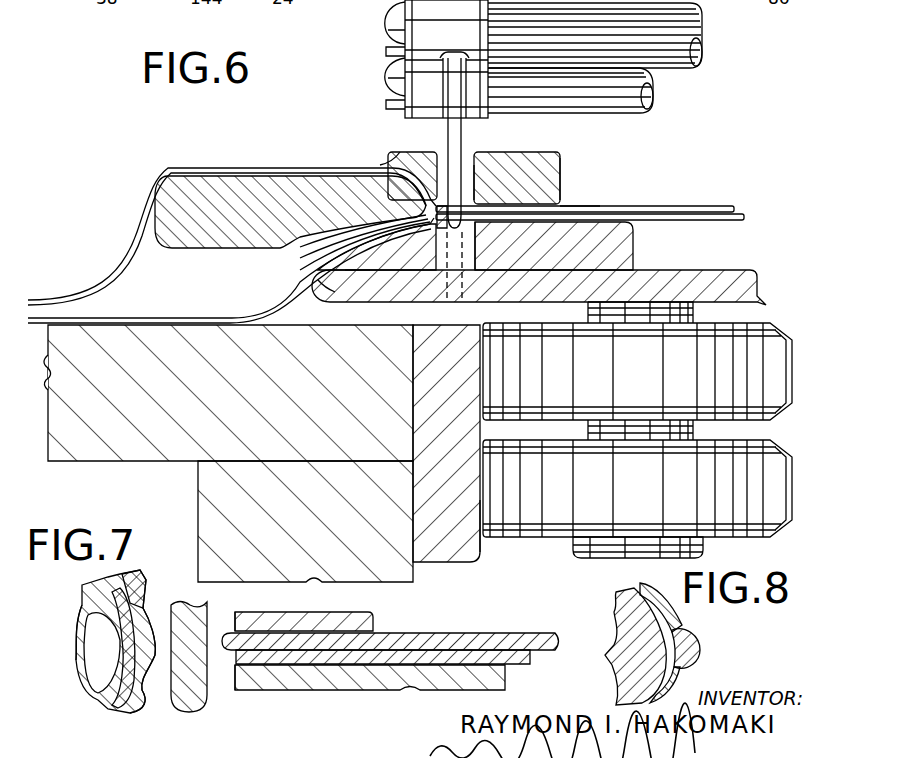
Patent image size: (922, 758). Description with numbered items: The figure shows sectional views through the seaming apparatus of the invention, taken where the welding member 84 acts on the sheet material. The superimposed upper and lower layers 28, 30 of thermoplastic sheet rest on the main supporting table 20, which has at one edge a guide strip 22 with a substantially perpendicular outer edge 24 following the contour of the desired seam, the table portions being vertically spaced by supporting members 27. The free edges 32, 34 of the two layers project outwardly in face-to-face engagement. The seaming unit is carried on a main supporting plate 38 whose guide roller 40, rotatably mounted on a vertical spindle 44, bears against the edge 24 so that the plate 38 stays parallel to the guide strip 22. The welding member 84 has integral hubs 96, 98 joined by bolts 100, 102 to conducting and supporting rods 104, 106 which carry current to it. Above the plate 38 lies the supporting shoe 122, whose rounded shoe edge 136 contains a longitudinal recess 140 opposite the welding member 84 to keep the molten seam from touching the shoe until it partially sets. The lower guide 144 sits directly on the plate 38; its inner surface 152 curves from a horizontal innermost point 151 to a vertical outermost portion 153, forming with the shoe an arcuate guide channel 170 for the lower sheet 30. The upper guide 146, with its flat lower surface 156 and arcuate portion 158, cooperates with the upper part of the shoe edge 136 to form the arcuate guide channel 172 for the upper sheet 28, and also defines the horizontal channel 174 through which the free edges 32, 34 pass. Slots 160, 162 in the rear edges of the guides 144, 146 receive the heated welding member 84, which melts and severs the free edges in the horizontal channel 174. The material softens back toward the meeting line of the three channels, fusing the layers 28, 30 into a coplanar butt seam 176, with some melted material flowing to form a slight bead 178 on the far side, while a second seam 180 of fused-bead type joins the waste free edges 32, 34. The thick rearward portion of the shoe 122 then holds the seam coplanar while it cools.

In FIG. 6, the main supporting table 20 is at (228, 408).
In FIG. 6, the guide strip 22 is at (442, 543).
In FIG. 6, the outer edge 24 is at (483, 548).
In FIG. 6, the supporting members 27 is at (207, 485).
In FIG. 6, the upper layer 28 is at (124, 253).
In FIG. 6, the lower layer 30 is at (290, 290).
In FIG. 6, the free edge of upper layer 32 is at (669, 205).
In FIG. 7, the free edge of upper layer 32 is at (493, 633).
In FIG. 6, the free edge of lower layer 34 is at (707, 221).
In FIG. 7, the free edge of lower layer 34 is at (512, 665).
In FIG. 6, the main supporting plate 38 is at (741, 281).
In FIG. 6, the guide roller 40 is at (527, 513).
In FIG. 6, the vertical spindle 44 is at (590, 545).
In FIG. 6, the welding member 84 is at (472, 166).
In FIG. 7, the welding member 84 is at (202, 707).
In FIG. 6, the hub 96 is at (437, 24).
In FIG. 6, the hub 98 is at (437, 93).
In FIG. 6, the bolt 100 is at (398, 16).
In FIG. 6, the bolt 102 is at (398, 96).
In FIG. 6, the conducting and supporting rod 104 is at (699, 14).
In FIG. 6, the conducting and supporting rod 106 is at (633, 112).
In FIG. 6, the supporting shoe 122 is at (222, 235).
In FIG. 7, the supporting shoe 122 is at (80, 618).
In FIG. 8, the supporting shoe 122 is at (616, 660).
In FIG. 6, the rounded shoe edge 136 is at (382, 164).
In FIG. 6, the longitudinal recess 140 is at (375, 175).
In FIG. 7, the longitudinal recess 140 is at (78, 652).
In FIG. 6, the lower guide 144 is at (621, 242).
In FIG. 7, the lower guide 144 is at (333, 674).
In FIG. 6, the upper guide 146 is at (513, 163).
In FIG. 7, the upper guide 146 is at (357, 612).
In FIG. 6, the horizontal innermost point 151 is at (349, 300).
In FIG. 6, the longitudinally extending surface 152 is at (388, 299).
In FIG. 6, the vertical outermost portion 153 is at (405, 262).
In FIG. 6, the flat lower surface 156 is at (487, 200).
In FIG. 6, the arcuate longitudinal portion 158 is at (423, 163).
In FIG. 7, the arcuate longitudinal portion 158 is at (131, 580).
In FIG. 6, the slot 160 is at (476, 266).
In FIG. 7, the slot 160 is at (224, 692).
In FIG. 6, the slot 162 is at (474, 188).
In FIG. 7, the slot 162 is at (221, 617).
In FIG. 6, the arcuate guide channel 170 is at (302, 270).
In FIG. 6, the arcuate guide channel 172 is at (385, 162).
In FIG. 6, the horizontal channel 174 is at (566, 204).
In FIG. 6, the butt seam 176 is at (446, 265).
In FIG. 7, the butt seam 176 is at (150, 695).
In FIG. 8, the butt seam 176 is at (701, 646).
In FIG. 6, the bead 178 is at (302, 248).
In FIG. 7, the bead 178 is at (116, 708).
In FIG. 8, the bead 178 is at (680, 622).
In FIG. 6, the seam 180 is at (475, 270).